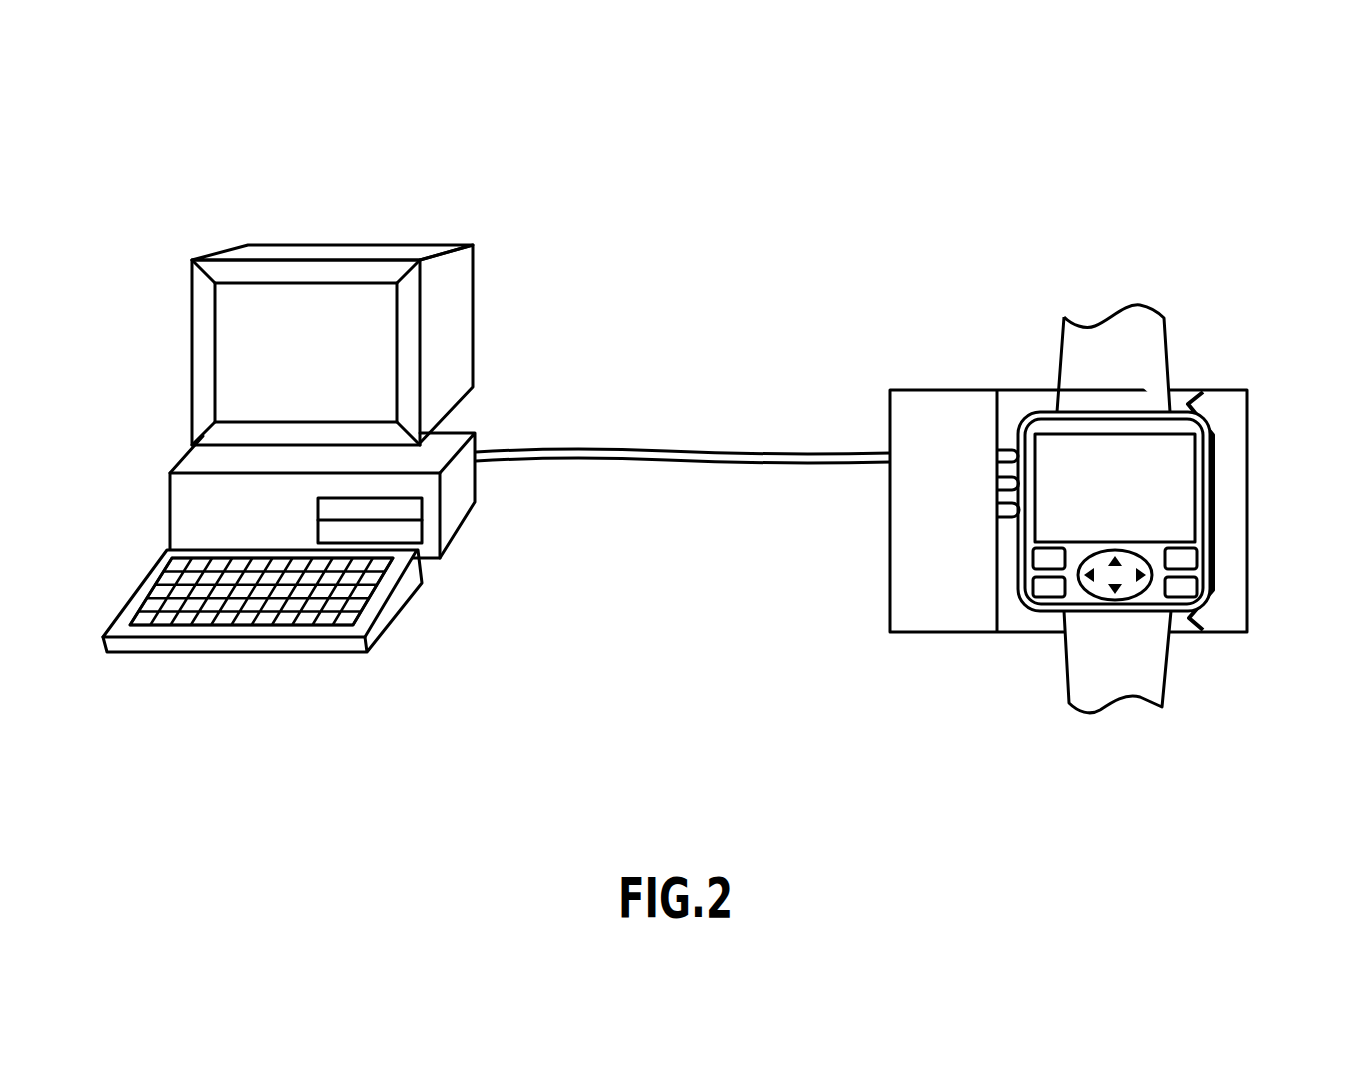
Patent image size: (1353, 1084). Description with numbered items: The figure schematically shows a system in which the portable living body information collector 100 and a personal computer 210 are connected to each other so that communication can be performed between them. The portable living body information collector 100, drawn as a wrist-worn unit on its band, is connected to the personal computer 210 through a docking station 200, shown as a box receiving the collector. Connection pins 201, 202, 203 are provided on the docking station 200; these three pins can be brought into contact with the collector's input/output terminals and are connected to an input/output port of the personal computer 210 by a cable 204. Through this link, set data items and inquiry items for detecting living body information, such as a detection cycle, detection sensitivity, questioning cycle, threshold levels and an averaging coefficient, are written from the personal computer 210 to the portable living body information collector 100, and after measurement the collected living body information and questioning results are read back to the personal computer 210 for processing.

The portable living body information collector 100 is at (1153, 263).
The docking station 200 is at (1242, 356).
The connection pin 201 is at (1007, 453).
The connection pin 202 is at (997, 472).
The connection pin 203 is at (1000, 508).
The cable 204 is at (665, 458).
The personal computer 210 is at (434, 206).